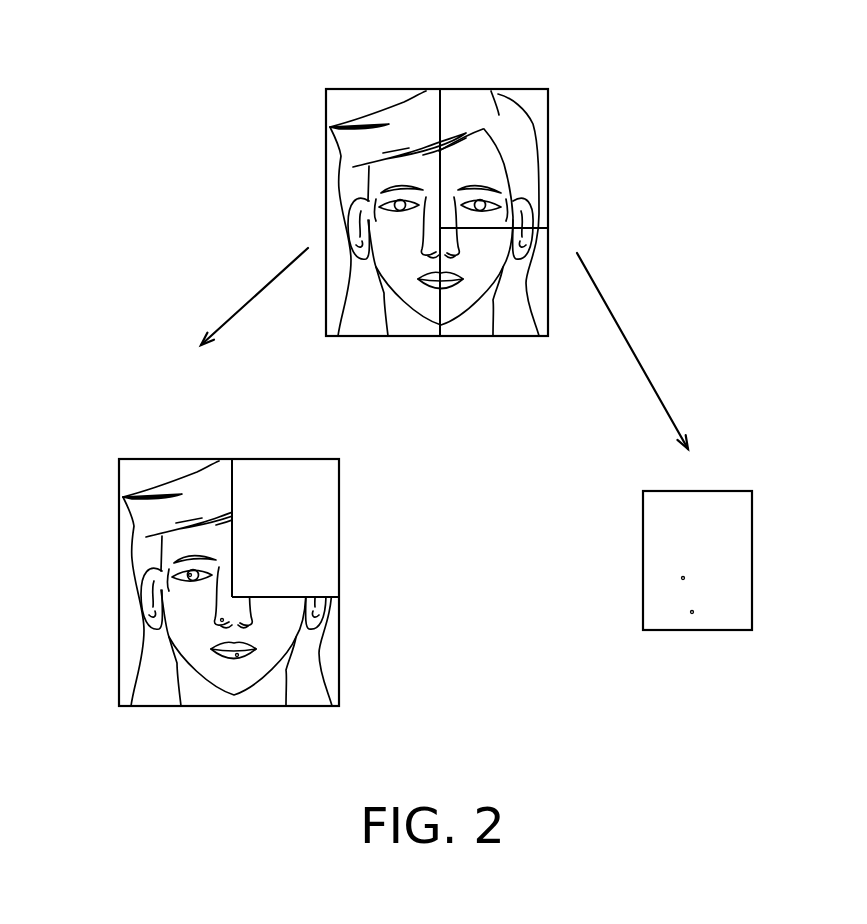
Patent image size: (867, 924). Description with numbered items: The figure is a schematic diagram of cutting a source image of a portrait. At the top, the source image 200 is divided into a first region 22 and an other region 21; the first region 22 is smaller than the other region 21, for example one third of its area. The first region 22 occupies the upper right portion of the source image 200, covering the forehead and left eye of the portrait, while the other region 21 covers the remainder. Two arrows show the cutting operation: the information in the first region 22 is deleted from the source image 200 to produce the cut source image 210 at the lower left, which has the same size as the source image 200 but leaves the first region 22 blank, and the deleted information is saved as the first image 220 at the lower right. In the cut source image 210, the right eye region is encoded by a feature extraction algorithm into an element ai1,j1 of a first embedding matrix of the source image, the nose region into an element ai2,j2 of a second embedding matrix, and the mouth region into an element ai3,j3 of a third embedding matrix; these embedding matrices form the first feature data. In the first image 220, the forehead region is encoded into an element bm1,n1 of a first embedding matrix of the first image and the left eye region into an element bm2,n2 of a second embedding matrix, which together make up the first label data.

The source image 200 is at (553, 381).
The other region 21 is at (390, 89).
The first region 22 is at (507, 89).
The cut source image 210 is at (343, 749).
The first image 220 is at (757, 674).
The element of the first embedding matrix of the source image ai1,j1 is at (190, 575).
The element of the second embedding matrix of the source image ai2,j2 is at (222, 620).
The element of the third embedding matrix of the source image ai3,j3 is at (237, 655).
The element of the first embedding matrix of the first image bm1,n1 is at (683, 578).
The element of the second embedding matrix of the first image bm2,n2 is at (692, 612).